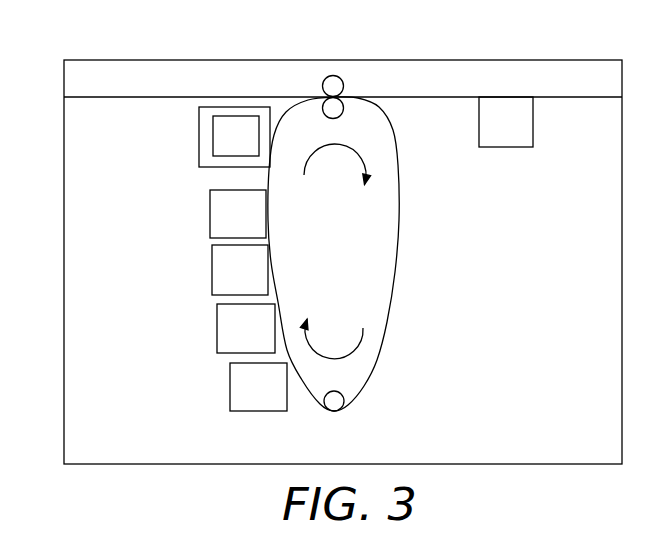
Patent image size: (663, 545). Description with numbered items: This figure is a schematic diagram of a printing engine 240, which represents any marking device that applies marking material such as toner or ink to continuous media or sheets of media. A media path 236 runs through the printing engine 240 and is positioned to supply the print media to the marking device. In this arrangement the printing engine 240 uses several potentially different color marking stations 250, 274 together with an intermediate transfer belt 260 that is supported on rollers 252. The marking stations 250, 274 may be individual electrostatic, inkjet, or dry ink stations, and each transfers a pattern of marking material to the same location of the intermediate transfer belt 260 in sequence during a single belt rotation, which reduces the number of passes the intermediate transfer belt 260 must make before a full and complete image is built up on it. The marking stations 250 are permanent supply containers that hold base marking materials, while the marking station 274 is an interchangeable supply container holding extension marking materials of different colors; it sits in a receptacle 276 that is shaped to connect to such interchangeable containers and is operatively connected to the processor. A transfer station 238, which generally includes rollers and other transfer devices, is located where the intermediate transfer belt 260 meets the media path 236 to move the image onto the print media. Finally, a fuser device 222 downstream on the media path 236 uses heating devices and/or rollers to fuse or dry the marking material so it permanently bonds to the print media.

The fuser device 222 is at (533, 123).
The media path 236 is at (131, 103).
The transfer station 238 is at (312, 86).
The printing engine 240 is at (63, 250).
The marking station 250 is at (210, 222).
The rollers 252 is at (352, 112).
The intermediate transfer belt 260 is at (388, 325).
The interchangeable supply container 274 is at (260, 148).
The receptacle 276 is at (199, 135).